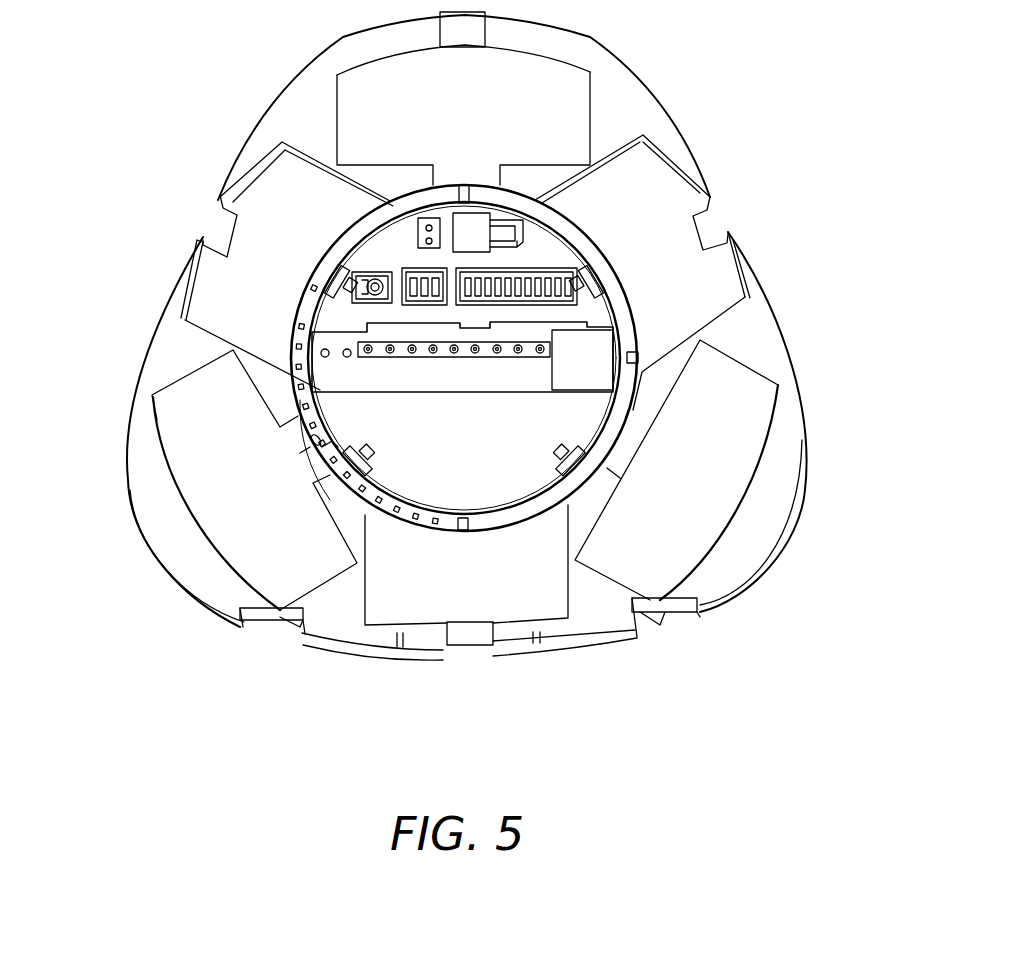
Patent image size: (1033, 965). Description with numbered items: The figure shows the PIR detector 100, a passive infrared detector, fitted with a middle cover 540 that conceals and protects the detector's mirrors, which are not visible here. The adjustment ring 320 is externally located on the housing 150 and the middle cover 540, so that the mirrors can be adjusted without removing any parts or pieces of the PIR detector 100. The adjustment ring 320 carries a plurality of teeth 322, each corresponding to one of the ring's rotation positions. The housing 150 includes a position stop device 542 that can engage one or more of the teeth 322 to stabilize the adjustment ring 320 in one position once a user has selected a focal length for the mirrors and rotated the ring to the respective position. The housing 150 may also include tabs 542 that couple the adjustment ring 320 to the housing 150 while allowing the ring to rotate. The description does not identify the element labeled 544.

The PIR detector 100 is at (451, 328).
The housing 150 is at (758, 335).
The adjustment ring 320 is at (570, 232).
The teeth 322 is at (408, 490).
The middle cover 540 is at (193, 435).
The position stop device 542 is at (308, 388).
The retaining clip 544 is at (598, 277).